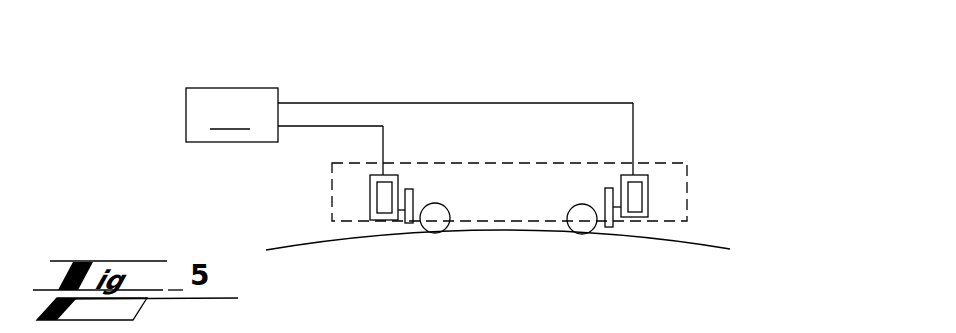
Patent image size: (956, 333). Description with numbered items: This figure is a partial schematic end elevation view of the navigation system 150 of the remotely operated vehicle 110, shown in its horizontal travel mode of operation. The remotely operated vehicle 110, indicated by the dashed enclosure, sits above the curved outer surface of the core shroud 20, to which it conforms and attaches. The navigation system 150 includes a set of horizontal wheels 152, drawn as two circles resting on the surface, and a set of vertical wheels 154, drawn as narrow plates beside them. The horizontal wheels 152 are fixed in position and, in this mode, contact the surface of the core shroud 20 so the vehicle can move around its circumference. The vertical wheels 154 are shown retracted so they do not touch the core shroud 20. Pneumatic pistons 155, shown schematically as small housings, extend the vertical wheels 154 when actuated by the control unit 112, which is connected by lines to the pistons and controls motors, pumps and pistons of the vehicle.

The navigation system 150 is at (352, 50).
The control unit 112 is at (232, 115).
The pneumatic pistons 155 is at (363, 193).
The vertical wheels 154 is at (417, 188).
The horizontal wheels 152 is at (448, 212).
The remotely operated vehicle 110 is at (703, 197).
The core shroud 20 is at (690, 243).